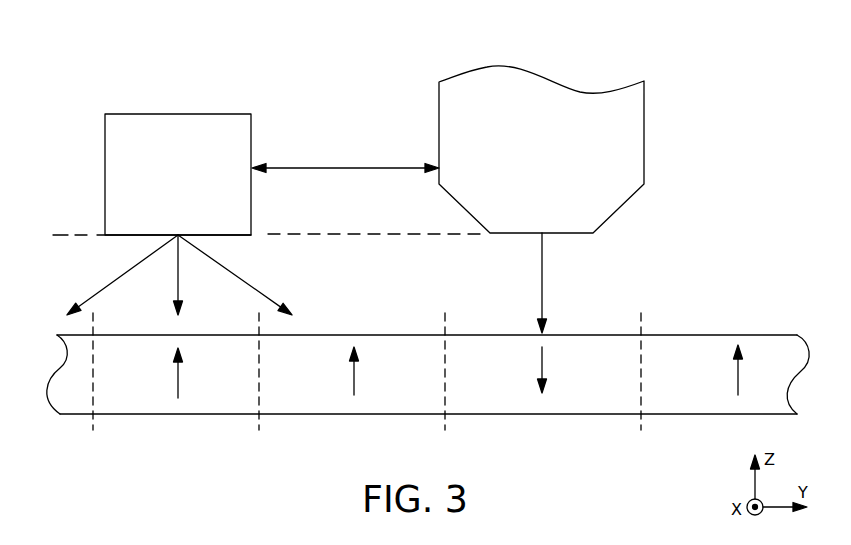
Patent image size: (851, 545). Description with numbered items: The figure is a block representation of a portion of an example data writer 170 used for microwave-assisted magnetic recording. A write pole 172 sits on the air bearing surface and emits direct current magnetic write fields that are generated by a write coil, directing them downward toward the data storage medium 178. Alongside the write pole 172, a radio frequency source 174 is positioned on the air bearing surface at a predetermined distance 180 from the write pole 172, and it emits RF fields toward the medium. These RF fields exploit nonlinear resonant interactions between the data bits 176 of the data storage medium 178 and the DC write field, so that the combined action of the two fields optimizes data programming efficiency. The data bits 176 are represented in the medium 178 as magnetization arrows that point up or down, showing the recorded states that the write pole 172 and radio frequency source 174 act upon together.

The data writer 170 is at (101, 66).
The write pole 172 is at (559, 110).
The radio frequency source 174 is at (245, 136).
The data bits 176 is at (178, 388).
The data storage medium 178 is at (62, 414).
The predetermined distance 180 is at (345, 161).